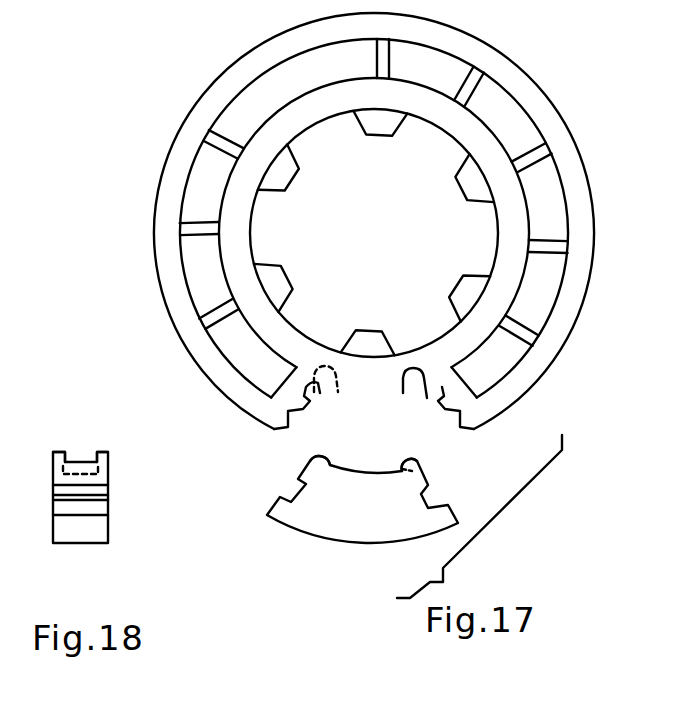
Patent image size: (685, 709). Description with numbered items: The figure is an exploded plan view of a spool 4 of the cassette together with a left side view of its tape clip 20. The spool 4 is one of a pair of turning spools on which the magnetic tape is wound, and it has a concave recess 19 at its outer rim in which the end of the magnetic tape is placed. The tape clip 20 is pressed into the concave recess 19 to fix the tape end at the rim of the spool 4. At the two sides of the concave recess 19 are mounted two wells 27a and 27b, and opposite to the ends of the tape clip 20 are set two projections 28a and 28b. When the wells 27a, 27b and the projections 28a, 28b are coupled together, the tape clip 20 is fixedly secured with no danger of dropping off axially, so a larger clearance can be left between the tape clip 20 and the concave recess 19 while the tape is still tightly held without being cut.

In FIG. 17, the turning spool 4 is at (550, 365).
In FIG. 17, the concave recess 19 is at (315, 407).
In FIG. 17, the tape clip 20 is at (343, 545).
In FIG. 18, the tape clip 20 is at (78, 545).
In FIG. 17, the well 27a is at (338, 394).
In FIG. 17, the well 27b is at (404, 393).
In FIG. 17, the projection 28a is at (333, 433).
In FIG. 18, the projection 28a is at (59, 450).
In FIG. 17, the projection 28b is at (403, 430).
In FIG. 18, the projection 28b is at (102, 449).